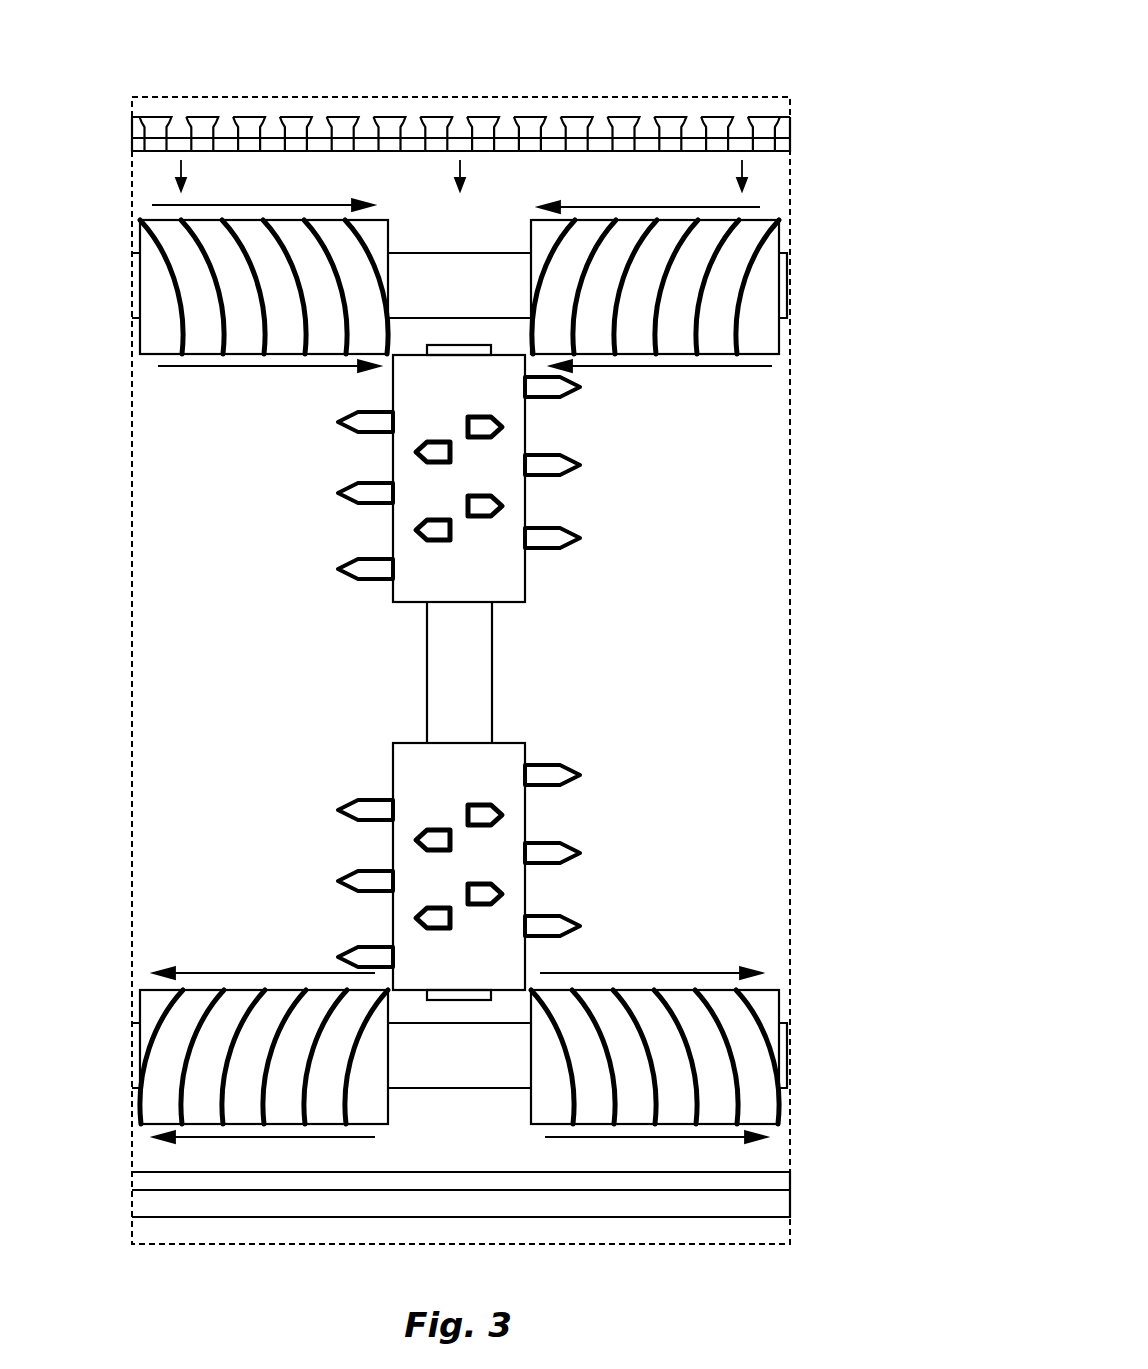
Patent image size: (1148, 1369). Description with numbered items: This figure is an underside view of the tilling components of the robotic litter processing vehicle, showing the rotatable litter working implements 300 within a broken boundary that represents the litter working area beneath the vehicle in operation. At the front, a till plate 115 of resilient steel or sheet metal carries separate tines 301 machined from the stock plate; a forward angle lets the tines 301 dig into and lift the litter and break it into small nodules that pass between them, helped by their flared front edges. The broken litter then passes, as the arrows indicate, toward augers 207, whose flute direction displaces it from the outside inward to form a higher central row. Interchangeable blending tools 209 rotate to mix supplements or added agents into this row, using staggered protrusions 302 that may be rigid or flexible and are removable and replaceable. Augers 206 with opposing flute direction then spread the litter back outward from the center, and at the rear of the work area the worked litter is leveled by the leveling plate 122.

The rotable litter working implements 300 is at (413, 63).
The tines 301 is at (437, 117).
The till plate 115 is at (790, 128).
The augers 207 is at (388, 243).
The protrusions 302 is at (345, 957).
The blending tools 209 is at (525, 573).
The augers 206 is at (388, 1110).
The leveling plate 122 is at (790, 1182).